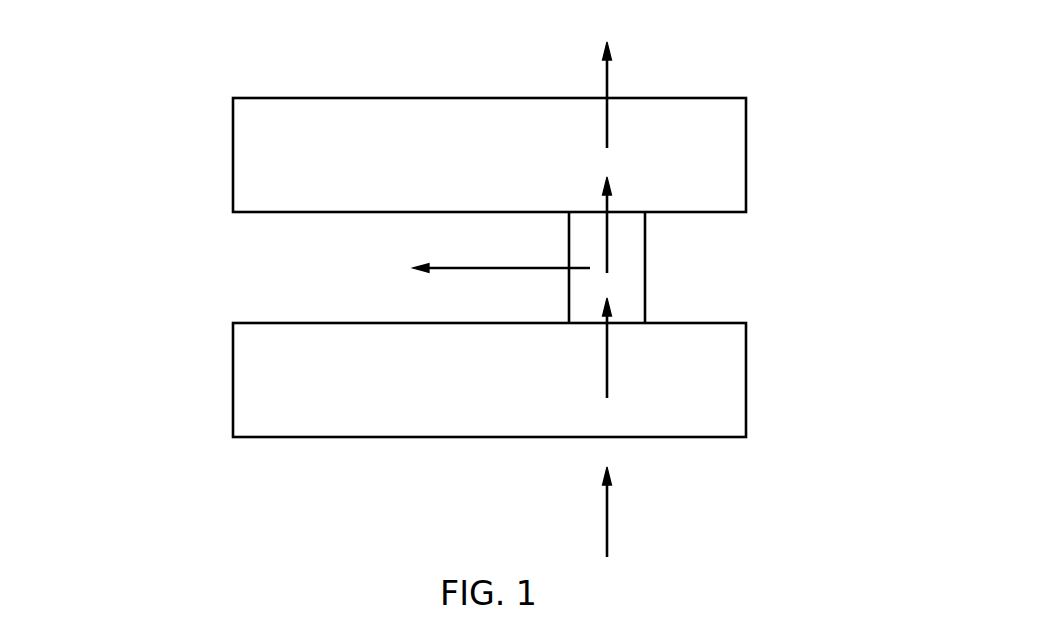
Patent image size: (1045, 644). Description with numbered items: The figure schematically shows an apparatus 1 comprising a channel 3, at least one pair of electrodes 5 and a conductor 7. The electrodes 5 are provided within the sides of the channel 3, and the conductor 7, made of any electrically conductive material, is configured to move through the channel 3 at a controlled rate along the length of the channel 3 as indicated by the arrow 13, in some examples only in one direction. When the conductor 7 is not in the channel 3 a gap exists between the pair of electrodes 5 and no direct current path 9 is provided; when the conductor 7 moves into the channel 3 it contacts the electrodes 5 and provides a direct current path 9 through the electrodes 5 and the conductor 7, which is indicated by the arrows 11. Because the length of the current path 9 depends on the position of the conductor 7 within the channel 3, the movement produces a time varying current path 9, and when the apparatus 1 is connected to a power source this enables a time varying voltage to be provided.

The apparatus 1 is at (762, 80).
The channel 3 is at (761, 248).
The pair of electrodes 5 is at (265, 194).
The conductor 7 is at (645, 290).
The current path 9 is at (622, 492).
The arrows 11 is at (607, 80).
The arrow 13 is at (470, 267).